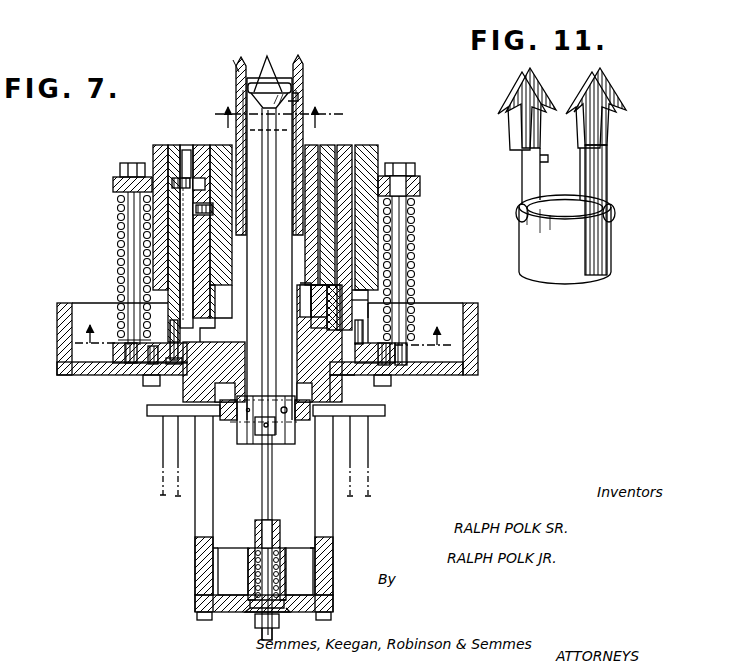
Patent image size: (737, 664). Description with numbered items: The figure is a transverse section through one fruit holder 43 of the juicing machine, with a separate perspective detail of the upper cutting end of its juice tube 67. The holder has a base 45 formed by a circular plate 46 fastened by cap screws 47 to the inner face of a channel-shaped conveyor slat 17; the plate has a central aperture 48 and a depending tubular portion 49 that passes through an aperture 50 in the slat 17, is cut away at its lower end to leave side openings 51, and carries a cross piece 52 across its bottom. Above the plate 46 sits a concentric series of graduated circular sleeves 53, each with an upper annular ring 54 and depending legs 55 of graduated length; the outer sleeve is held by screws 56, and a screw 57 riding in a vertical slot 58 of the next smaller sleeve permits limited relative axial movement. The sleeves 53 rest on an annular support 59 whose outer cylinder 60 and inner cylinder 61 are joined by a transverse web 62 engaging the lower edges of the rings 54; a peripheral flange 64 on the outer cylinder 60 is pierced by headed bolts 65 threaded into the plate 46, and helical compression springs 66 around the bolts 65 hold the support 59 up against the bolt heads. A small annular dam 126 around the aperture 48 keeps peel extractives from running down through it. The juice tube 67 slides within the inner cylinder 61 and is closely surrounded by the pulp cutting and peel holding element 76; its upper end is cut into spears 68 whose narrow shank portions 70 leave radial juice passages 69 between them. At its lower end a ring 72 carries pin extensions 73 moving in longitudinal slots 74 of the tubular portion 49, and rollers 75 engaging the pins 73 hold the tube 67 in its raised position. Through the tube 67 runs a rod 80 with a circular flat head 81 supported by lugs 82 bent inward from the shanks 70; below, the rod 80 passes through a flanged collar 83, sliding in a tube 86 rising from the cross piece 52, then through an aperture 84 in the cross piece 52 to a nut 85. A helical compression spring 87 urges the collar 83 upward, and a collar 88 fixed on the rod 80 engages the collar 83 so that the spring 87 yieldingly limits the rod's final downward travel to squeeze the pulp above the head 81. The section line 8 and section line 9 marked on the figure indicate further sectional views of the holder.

In FIG. 7, the section line 8- 8 is at (263, 326).
In FIG. 7, the section line 9- 9 is at (275, 125).
In FIG. 7, the conveyor slat 17 is at (478, 327).
In FIG. 7, the fruit holder 43 is at (128, 156).
In FIG. 7, the base 45 is at (106, 354).
In FIG. 7, the circular plate 46 is at (308, 360).
In FIG. 7, the cap screws 47 is at (388, 386).
In FIG. 7, the central aperture 48 is at (222, 356).
In FIG. 7, the depending tubular portion 49 is at (200, 393).
In FIG. 7, the aperture 50 is at (352, 388).
In FIG. 7, the side openings 51 is at (297, 568).
In FIG. 7, the cross piece 52 is at (334, 607).
In FIG. 7, the circular sleeves 53 is at (345, 147).
In FIG. 7, the annular ring 54 is at (374, 162).
In FIG. 7, the legs 55 is at (352, 312).
In FIG. 7, the screws 56 is at (357, 340).
In FIG. 7, the screw 57 is at (178, 160).
In FIG. 7, the vertical slot 58 is at (191, 165).
In FIG. 7, the annular support 59 is at (151, 147).
In FIG. 7, the outer cylinder 60 is at (162, 206).
In FIG. 7, the inner cylinder 61 is at (312, 146).
In FIG. 7, the transverse web 62 is at (150, 243).
In FIG. 7, the peripheral flange 64 is at (421, 186).
In FIG. 7, the headed bolts 65 is at (130, 279).
In FIG. 7, the helical compression spring 66 is at (415, 254).
In FIG. 7, the juice tube 67 is at (264, 436).
In FIG. 11, the juice tube 67 is at (618, 251).
In FIG. 7, the spears 68 is at (237, 60).
In FIG. 11, the spears 68 is at (616, 174).
In FIG. 11, the radial juice passages 69 is at (560, 180).
In FIG. 11, the shank portions 70 is at (606, 203).
In FIG. 7, the ring 72 is at (229, 422).
In FIG. 7, the pin extensions 73 is at (384, 428).
In FIG. 7, the longitudinal slots 74 is at (203, 497).
In FIG. 7, the rollers 75 is at (162, 462).
In FIG. 7, the pulp cutting and peel holding element 76 is at (244, 106).
In FIG. 7, the rod 80 is at (273, 490).
In FIG. 7, the flat head 81 is at (279, 76).
In FIG. 7, the lugs 82 is at (297, 99).
In FIG. 11, the lugs 82 is at (540, 163).
In FIG. 7, the flanged collar 83 is at (279, 526).
In FIG. 7, the aperture 84 is at (254, 614).
In FIG. 7, the nut 85 is at (262, 632).
In FIG. 7, the tube 86 is at (286, 552).
In FIG. 7, the helical compression spring 87 is at (254, 553).
In FIG. 7, the collar 88 is at (276, 436).
In FIG. 7, the annular dam 126 is at (305, 340).